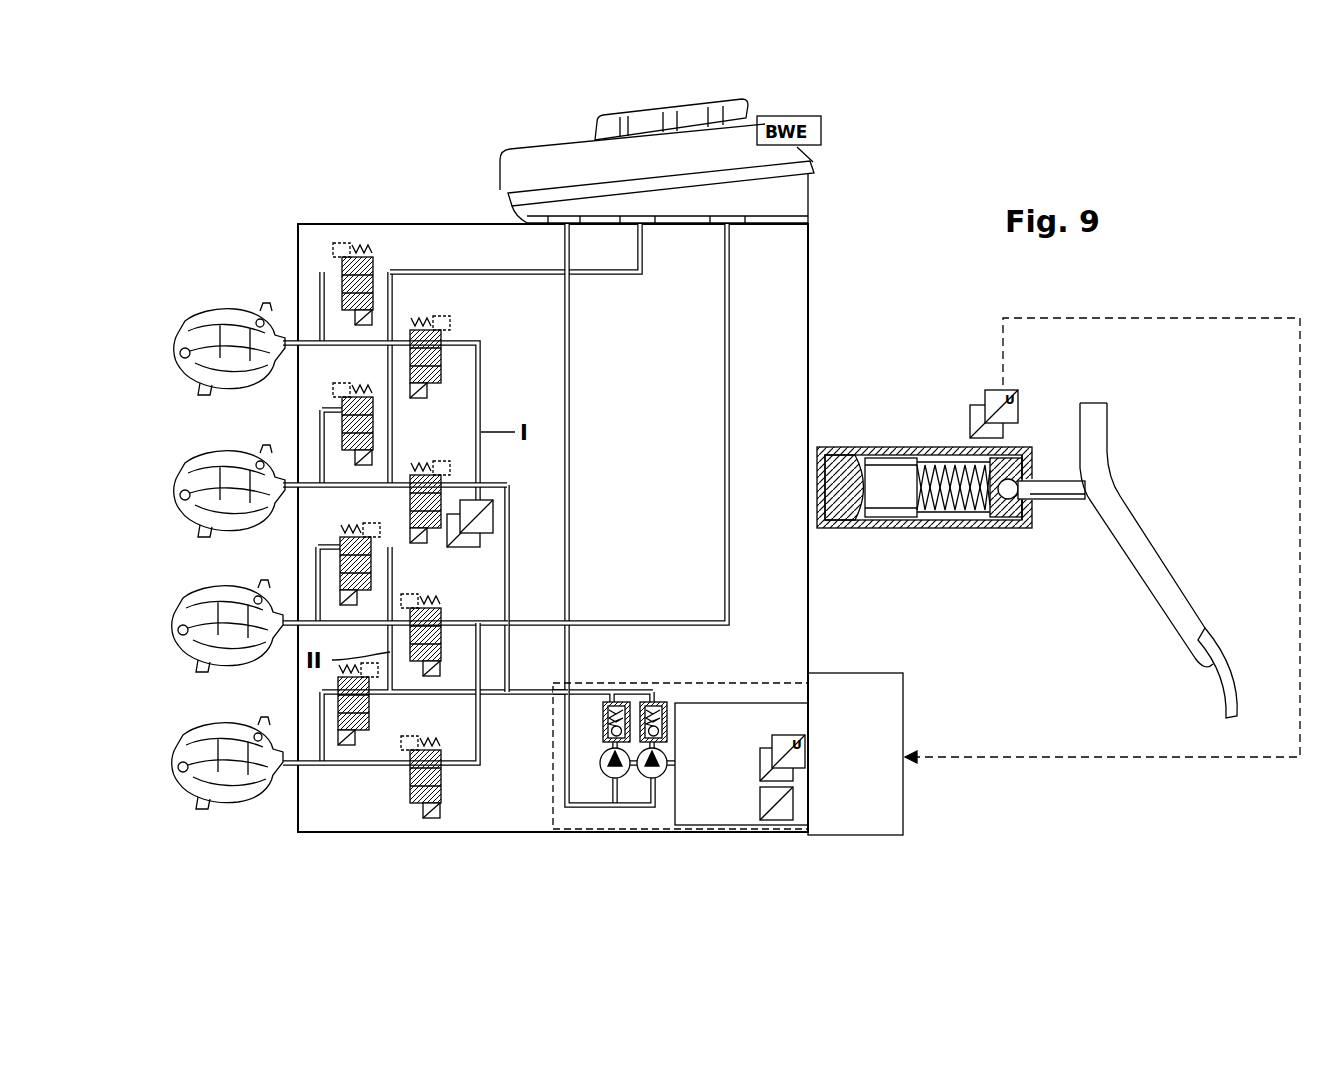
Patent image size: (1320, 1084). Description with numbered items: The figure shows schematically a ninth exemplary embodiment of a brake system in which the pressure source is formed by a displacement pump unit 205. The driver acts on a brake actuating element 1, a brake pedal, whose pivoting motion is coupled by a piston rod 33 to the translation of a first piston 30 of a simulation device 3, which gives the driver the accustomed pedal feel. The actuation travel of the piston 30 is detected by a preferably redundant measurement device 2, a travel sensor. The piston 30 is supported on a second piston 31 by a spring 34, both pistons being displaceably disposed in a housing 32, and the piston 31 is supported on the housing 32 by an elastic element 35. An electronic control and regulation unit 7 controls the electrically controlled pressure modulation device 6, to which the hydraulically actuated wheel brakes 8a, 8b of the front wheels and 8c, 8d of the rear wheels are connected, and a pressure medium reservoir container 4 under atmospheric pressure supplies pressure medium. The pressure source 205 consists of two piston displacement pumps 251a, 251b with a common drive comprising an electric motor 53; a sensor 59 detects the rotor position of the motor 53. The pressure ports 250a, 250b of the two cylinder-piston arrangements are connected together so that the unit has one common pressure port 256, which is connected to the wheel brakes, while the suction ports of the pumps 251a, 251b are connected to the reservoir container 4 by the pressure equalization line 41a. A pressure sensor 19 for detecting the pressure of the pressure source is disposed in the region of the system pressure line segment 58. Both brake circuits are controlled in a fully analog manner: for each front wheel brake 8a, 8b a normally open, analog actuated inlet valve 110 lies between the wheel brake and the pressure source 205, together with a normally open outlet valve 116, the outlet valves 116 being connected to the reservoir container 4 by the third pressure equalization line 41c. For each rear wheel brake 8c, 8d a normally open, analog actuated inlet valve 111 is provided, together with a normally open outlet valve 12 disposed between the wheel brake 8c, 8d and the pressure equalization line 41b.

The brake actuating element 1 is at (1142, 555).
The measurement device 2 is at (1020, 403).
The simulation device 3 is at (953, 515).
The pressure medium reservoir container 4 is at (553, 160).
The pressure modulation device 6 is at (365, 224).
The electronic control and regulation unit 7 is at (852, 836).
The wheel brake 8a is at (165, 346).
The wheel brake 8b is at (165, 487).
The wheel brake 8c is at (165, 617).
The wheel brake 8d is at (165, 757).
The outlet valve 12 is at (410, 636).
The pressure sensor 19 is at (470, 548).
The first piston 30 is at (1028, 508).
The second piston 31 is at (878, 470).
The housing 32 is at (900, 530).
The piston rod 33 is at (1055, 481).
The spring 34 is at (928, 470).
The elastic element 35 is at (864, 520).
The pressure equalization line 41a is at (570, 434).
The pressure equalization line 41b is at (727, 386).
The third pressure equalization line 41c is at (520, 272).
The electric motor 53 is at (745, 826).
The system pressure line segment 58 is at (510, 575).
The sensor 59 is at (790, 735).
The inlet valve 110 is at (441, 357).
The inlet valve 111 is at (371, 565).
The outlet valve 116 is at (342, 286).
The pressure source 205 is at (752, 683).
The pressure port 250a is at (602, 748).
The pressure port 250b is at (665, 748).
The piston displacement pump 251a is at (605, 783).
The piston displacement pump 251b is at (662, 783).
The pressure port 256 is at (553, 695).